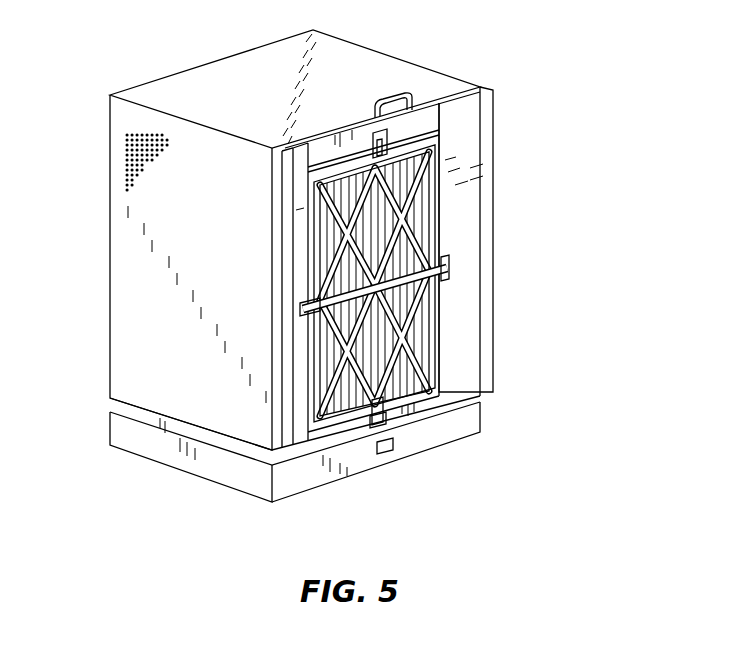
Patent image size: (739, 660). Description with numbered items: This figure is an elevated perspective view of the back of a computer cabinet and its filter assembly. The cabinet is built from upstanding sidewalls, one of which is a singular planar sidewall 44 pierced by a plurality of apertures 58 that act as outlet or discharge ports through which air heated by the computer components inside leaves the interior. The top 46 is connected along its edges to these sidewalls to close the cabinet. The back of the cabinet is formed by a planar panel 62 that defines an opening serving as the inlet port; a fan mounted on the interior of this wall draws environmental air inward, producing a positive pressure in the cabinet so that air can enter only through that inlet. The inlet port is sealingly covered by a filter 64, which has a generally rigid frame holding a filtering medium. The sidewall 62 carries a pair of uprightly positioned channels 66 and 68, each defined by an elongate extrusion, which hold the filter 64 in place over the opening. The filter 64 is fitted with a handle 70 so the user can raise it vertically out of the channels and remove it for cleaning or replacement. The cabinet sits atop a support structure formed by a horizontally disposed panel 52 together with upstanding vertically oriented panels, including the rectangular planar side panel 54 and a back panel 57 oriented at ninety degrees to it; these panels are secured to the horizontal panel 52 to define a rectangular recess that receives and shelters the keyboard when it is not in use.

The upstanding sidewall 44 is at (196, 374).
The top 46 is at (290, 101).
The horizontally disposed panel 52 is at (118, 408).
The upstanding vertically oriented panel 54 is at (173, 453).
The back panel 57 is at (430, 433).
The apertures 58 is at (148, 175).
The planar panel 62 is at (470, 203).
The filter 64 is at (410, 293).
The channel 66 is at (290, 271).
The channel 68 is at (440, 115).
The handle 70 is at (403, 93).